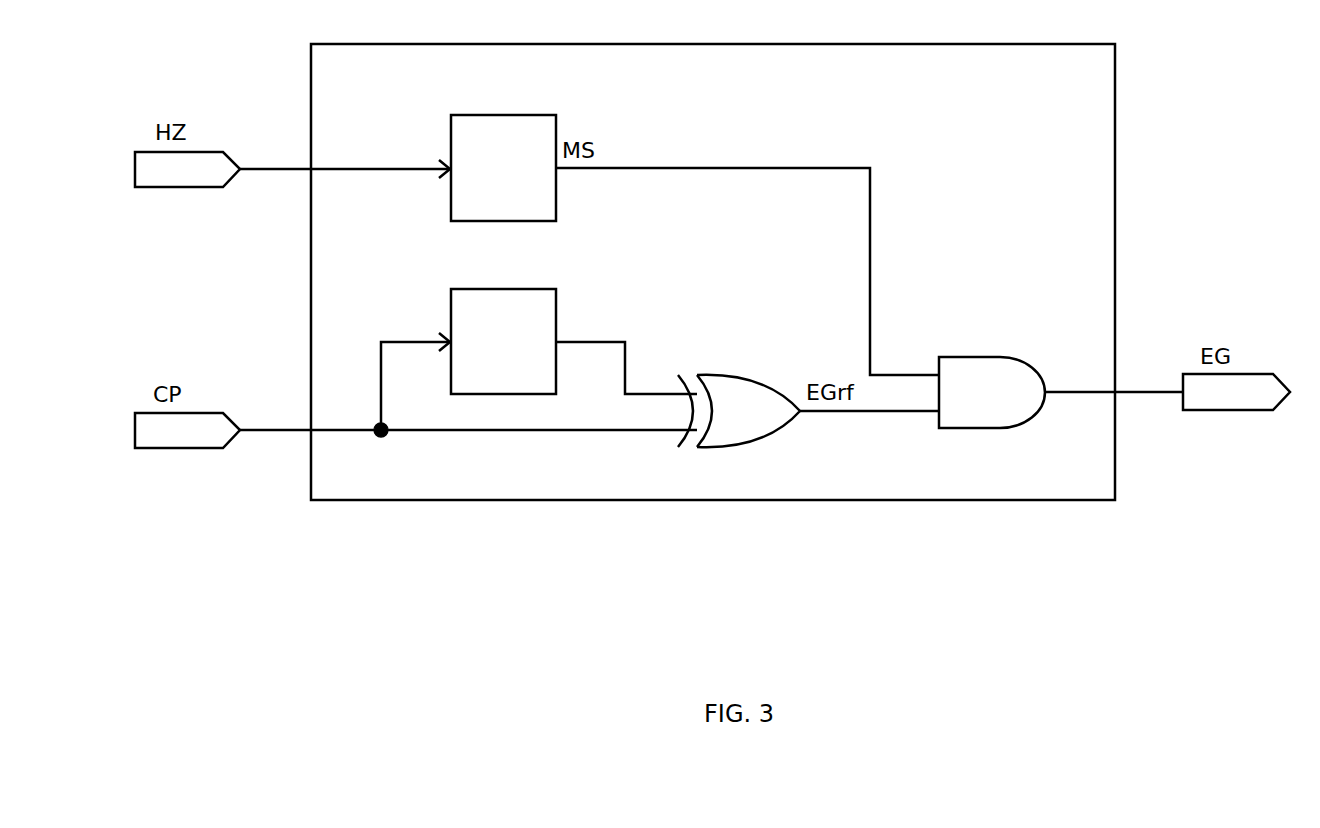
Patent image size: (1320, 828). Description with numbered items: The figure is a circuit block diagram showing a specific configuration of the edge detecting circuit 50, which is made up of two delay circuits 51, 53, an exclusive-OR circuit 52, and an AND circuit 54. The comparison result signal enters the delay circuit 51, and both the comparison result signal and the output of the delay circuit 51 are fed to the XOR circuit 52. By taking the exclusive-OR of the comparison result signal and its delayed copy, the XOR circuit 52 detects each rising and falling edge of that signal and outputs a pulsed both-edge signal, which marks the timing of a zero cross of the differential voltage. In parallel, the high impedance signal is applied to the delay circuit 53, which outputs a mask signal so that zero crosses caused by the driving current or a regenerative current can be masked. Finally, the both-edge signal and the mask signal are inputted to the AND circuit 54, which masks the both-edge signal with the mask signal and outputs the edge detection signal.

The edge detecting circuit 50 is at (1115, 68).
The delay circuit 51 is at (500, 289).
The XOR circuit 52 is at (697, 375).
The delay circuit 53 is at (500, 115).
The AND circuit 54 is at (940, 357).